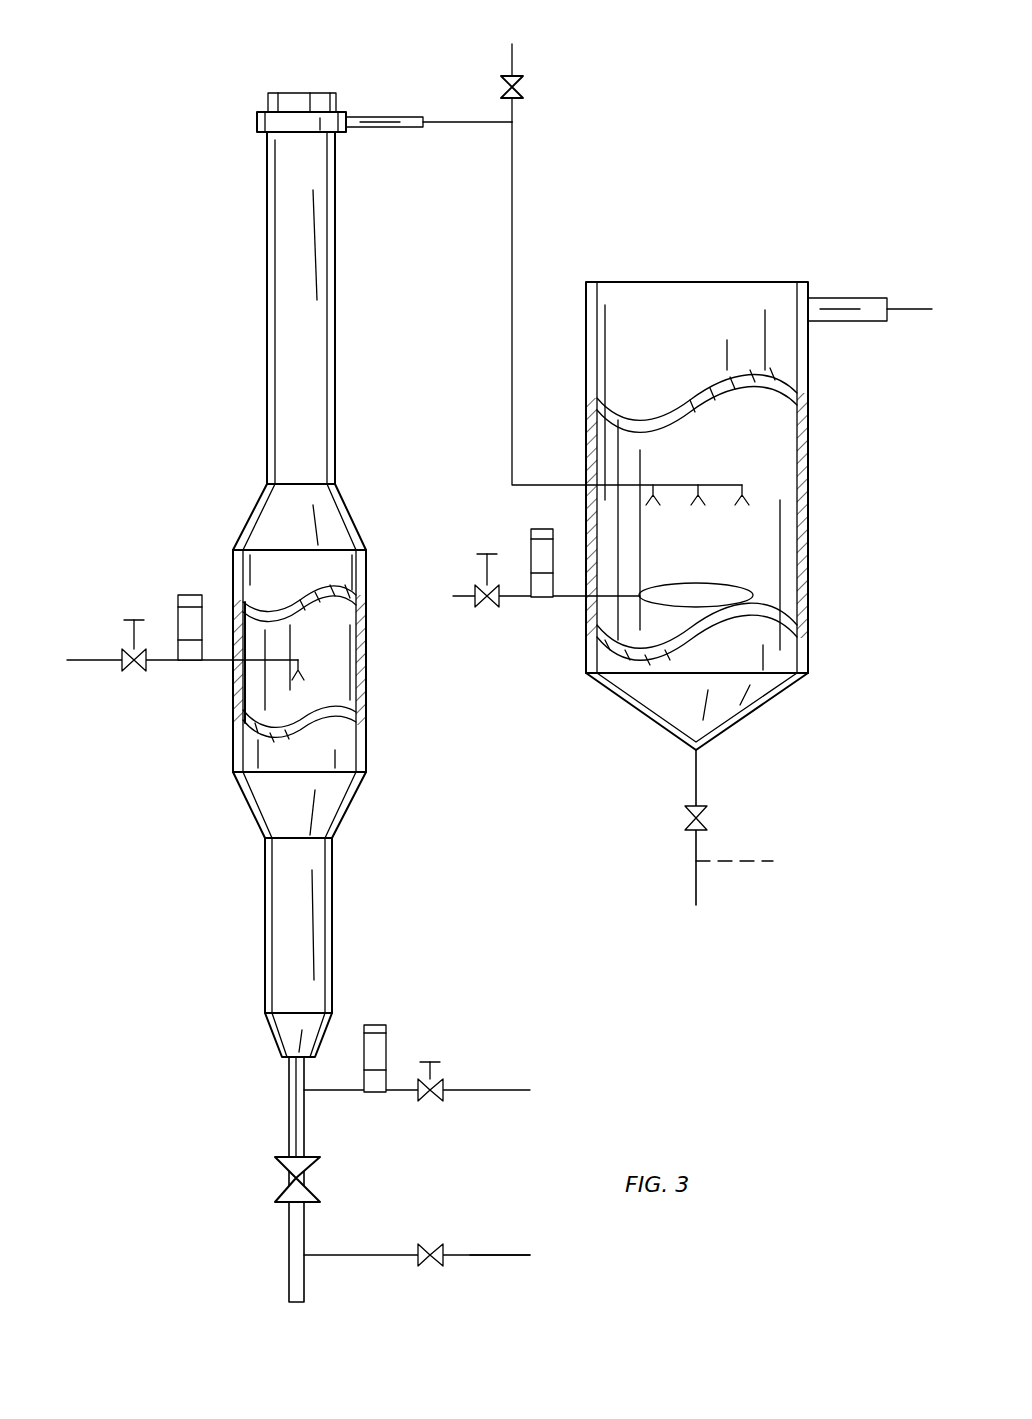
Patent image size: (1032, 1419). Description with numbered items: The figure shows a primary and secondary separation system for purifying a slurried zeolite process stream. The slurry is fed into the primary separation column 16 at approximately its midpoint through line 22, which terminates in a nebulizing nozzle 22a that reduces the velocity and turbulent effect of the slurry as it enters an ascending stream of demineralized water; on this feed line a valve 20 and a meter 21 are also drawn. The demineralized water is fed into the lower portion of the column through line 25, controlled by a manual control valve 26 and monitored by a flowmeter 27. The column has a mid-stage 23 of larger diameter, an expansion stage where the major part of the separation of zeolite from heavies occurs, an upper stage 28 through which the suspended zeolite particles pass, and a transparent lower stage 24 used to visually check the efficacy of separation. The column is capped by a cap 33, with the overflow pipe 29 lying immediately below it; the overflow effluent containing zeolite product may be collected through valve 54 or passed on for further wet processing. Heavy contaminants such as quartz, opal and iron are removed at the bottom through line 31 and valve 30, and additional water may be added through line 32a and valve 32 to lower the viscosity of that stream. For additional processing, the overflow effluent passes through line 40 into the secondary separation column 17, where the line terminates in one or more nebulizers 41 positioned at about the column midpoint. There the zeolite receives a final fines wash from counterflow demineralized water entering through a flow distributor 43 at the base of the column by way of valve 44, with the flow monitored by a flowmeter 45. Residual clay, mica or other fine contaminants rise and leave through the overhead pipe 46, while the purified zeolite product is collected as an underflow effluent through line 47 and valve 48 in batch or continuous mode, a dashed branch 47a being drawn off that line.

The primary separation column 16 is at (240, 250).
The secondary separation column 17 is at (700, 281).
The valve 20 is at (134, 670).
The flow meter 21 is at (190, 594).
The line 22 is at (90, 658).
The nebulizing nozzle 22a is at (305, 672).
The mid-stage 23 is at (233, 708).
The lower stage 24 is at (265, 930).
The line 25 is at (484, 1092).
The manual control valve 26 is at (420, 1060).
The flowmeter 27 is at (373, 1024).
The upper stage 28 is at (267, 310).
The overflow pipe 29 is at (386, 116).
The valve 30 is at (292, 1180).
The line 31 is at (289, 1108).
The valve 32 is at (432, 1268).
The line 32a is at (484, 1257).
The cap 33 is at (302, 92).
The line 40 is at (512, 272).
The nebulizers 41 is at (750, 500).
The flow distributor 43 is at (715, 583).
The valve 44 is at (480, 553).
The flowmeter 45 is at (542, 598).
The overhead pipe 46 is at (848, 296).
The line 47 is at (696, 775).
The branch line 47a is at (745, 863).
The valve 48 is at (708, 822).
The valve 54 is at (515, 60).